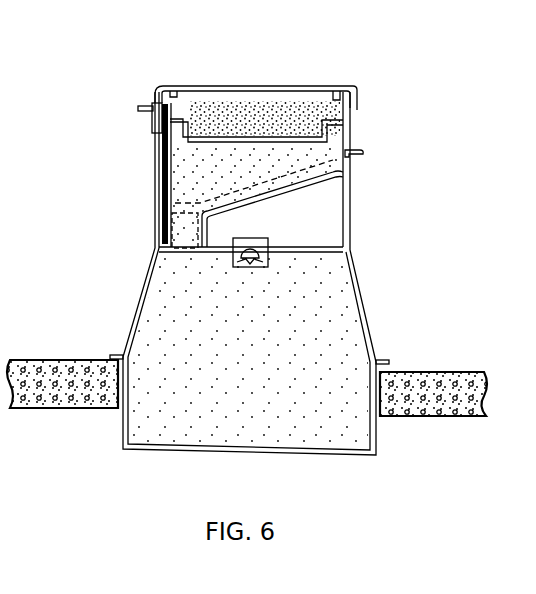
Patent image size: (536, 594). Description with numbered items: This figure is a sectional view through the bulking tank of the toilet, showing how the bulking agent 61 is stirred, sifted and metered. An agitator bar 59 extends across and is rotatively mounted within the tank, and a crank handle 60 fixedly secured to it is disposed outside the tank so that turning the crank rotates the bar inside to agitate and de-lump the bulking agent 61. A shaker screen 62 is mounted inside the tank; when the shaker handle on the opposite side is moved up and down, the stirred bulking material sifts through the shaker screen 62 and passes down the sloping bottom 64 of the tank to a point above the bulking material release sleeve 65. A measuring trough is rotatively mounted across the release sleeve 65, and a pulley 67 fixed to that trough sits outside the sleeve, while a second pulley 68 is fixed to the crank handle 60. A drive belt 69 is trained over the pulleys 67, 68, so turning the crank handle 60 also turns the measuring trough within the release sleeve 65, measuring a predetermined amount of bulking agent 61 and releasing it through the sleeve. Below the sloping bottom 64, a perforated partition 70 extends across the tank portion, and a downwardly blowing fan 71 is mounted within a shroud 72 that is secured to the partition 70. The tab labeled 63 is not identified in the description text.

The agitator bar 59 is at (300, 88).
The crank handle 60 is at (147, 105).
The bulking agent 61 is at (208, 115).
The shaker screen 62 is at (353, 88).
The tab 63 is at (363, 152).
The sloping bottom 64 is at (262, 195).
The bulking material release sleeve 65 is at (165, 249).
The pulley 67 is at (167, 228).
The second pulley 68 is at (161, 84).
The drive belt 69 is at (167, 160).
The perforated partition 70 is at (313, 247).
The downwardly blowing fan 71 is at (268, 242).
The shroud 72 is at (237, 252).